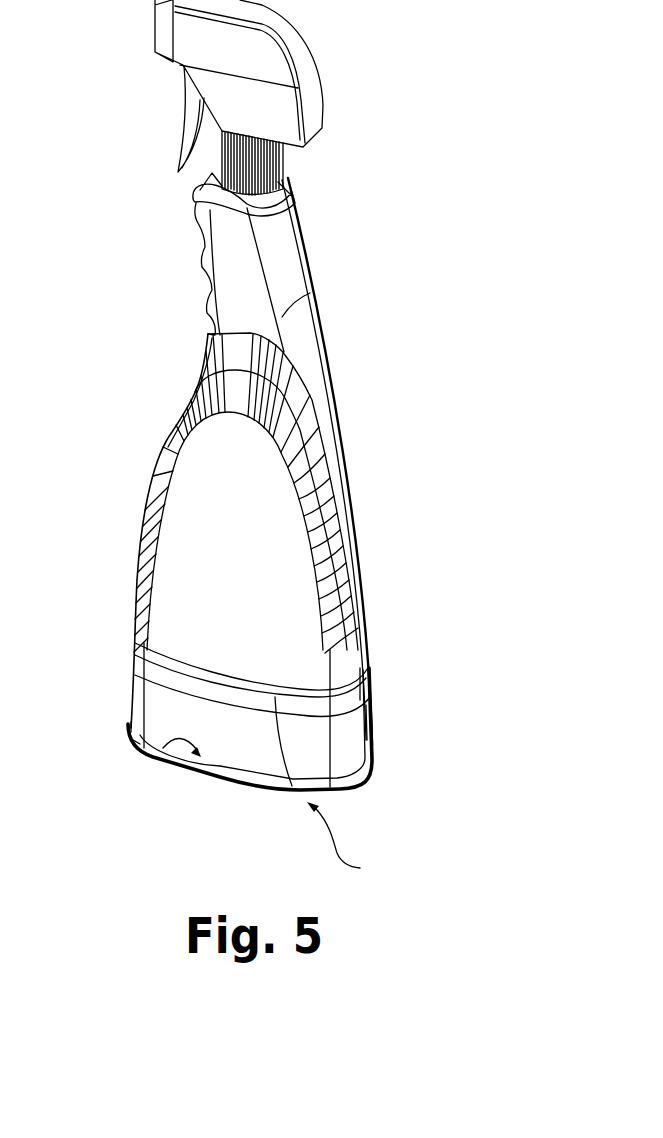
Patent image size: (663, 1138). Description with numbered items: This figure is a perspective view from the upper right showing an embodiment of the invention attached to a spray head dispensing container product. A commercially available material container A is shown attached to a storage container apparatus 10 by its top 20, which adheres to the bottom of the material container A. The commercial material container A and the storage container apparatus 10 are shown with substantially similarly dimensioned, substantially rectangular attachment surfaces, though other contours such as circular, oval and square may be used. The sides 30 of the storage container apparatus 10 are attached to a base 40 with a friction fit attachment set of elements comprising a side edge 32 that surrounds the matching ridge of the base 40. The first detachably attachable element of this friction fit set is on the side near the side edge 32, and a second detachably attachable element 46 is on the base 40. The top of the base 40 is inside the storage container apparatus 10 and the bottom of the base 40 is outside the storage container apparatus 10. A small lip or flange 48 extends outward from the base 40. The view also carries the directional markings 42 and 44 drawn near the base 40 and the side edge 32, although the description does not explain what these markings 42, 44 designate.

The storage container apparatus 10 is at (434, 677).
The top 20 is at (293, 793).
The sides 30 is at (162, 708).
The side edge 32 is at (225, 777).
The base 40 is at (367, 772).
The rotation direction arrow 42 is at (158, 753).
The direction arrow 44 is at (345, 845).
The second detachably attachable element 46 is at (127, 740).
The lip or flange 48 is at (128, 748).
The material container A is at (293, 542).